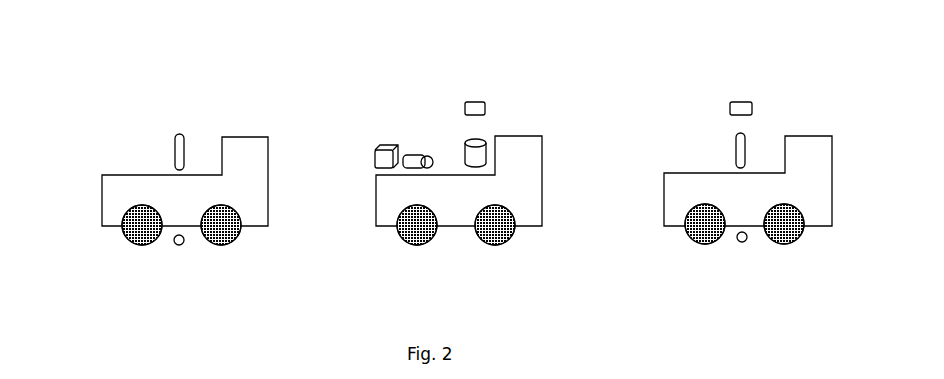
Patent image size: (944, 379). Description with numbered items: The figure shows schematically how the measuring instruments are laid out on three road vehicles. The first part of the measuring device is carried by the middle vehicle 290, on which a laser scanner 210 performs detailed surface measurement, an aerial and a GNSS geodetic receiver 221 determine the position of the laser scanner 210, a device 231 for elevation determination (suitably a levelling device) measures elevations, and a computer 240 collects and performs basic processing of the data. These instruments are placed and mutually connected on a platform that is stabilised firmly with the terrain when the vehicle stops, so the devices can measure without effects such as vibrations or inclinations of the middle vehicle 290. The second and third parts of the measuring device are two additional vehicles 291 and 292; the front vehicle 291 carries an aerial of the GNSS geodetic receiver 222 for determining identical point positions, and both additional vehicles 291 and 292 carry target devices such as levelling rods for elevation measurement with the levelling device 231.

The laser scanner 210 is at (479, 135).
The GNSS geodetic receiver 221 is at (477, 100).
The aerial of the GNSS geodetic receiver 222 is at (742, 100).
The device for elevation determination 231 is at (417, 154).
The computer 240 is at (375, 152).
The middle vehicle 290 is at (378, 218).
The front vehicle 291 is at (672, 210).
The additional vehicle 292 is at (105, 218).